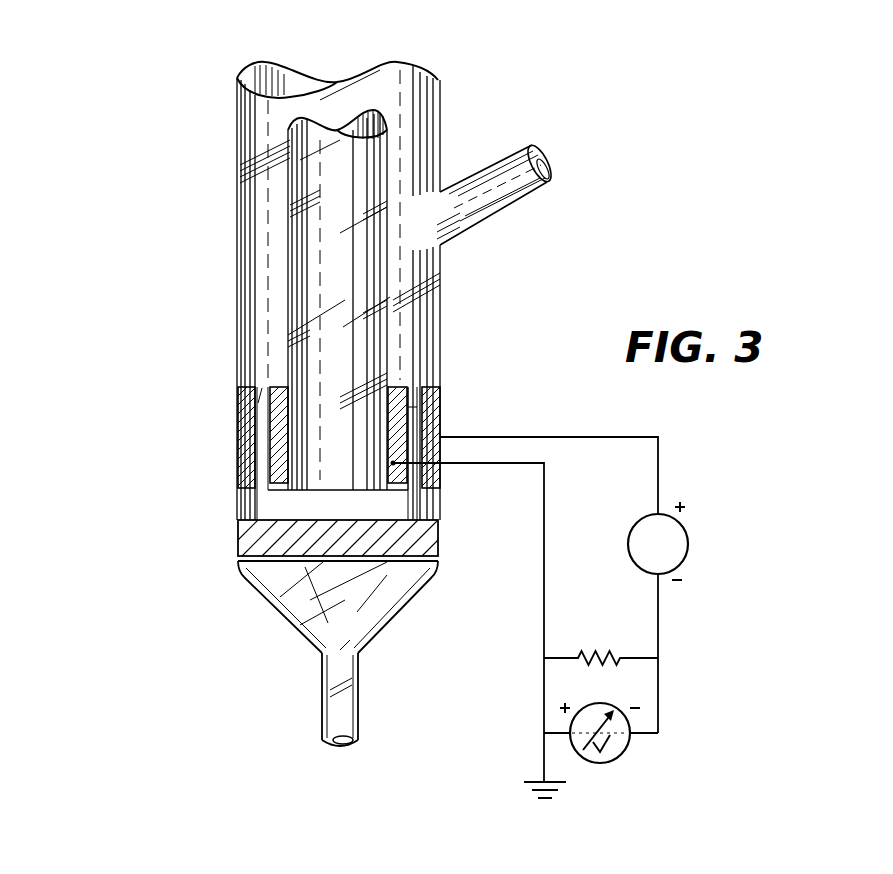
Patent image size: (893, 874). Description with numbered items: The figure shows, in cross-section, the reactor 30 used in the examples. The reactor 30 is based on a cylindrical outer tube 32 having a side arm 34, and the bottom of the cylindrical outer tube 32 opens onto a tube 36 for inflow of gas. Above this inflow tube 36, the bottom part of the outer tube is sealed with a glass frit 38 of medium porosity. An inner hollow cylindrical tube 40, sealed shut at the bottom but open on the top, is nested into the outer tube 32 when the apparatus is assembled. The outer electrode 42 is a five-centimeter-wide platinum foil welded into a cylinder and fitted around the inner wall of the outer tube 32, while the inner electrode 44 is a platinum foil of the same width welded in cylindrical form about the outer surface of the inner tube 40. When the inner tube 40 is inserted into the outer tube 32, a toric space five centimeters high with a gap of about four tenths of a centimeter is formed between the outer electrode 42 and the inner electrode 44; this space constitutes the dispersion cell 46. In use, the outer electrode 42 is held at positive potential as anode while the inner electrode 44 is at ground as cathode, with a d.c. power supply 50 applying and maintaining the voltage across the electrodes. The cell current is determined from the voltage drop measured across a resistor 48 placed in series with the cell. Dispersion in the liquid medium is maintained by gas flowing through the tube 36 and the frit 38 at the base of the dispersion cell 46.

The reactor 30 is at (128, 130).
The cylindrical outer tube 32 is at (238, 143).
The side arm 34 is at (490, 166).
The tube for inflow of gas 36 is at (333, 708).
The glass frit 38 is at (238, 540).
The inner hollow cylindrical tube 40 is at (336, 147).
The outer electrode 42 is at (238, 420).
The inner electrode 44 is at (268, 385).
The dispersion cell 46 is at (262, 388).
The resistor 48 is at (616, 622).
The d.c. power supply 50 is at (688, 548).